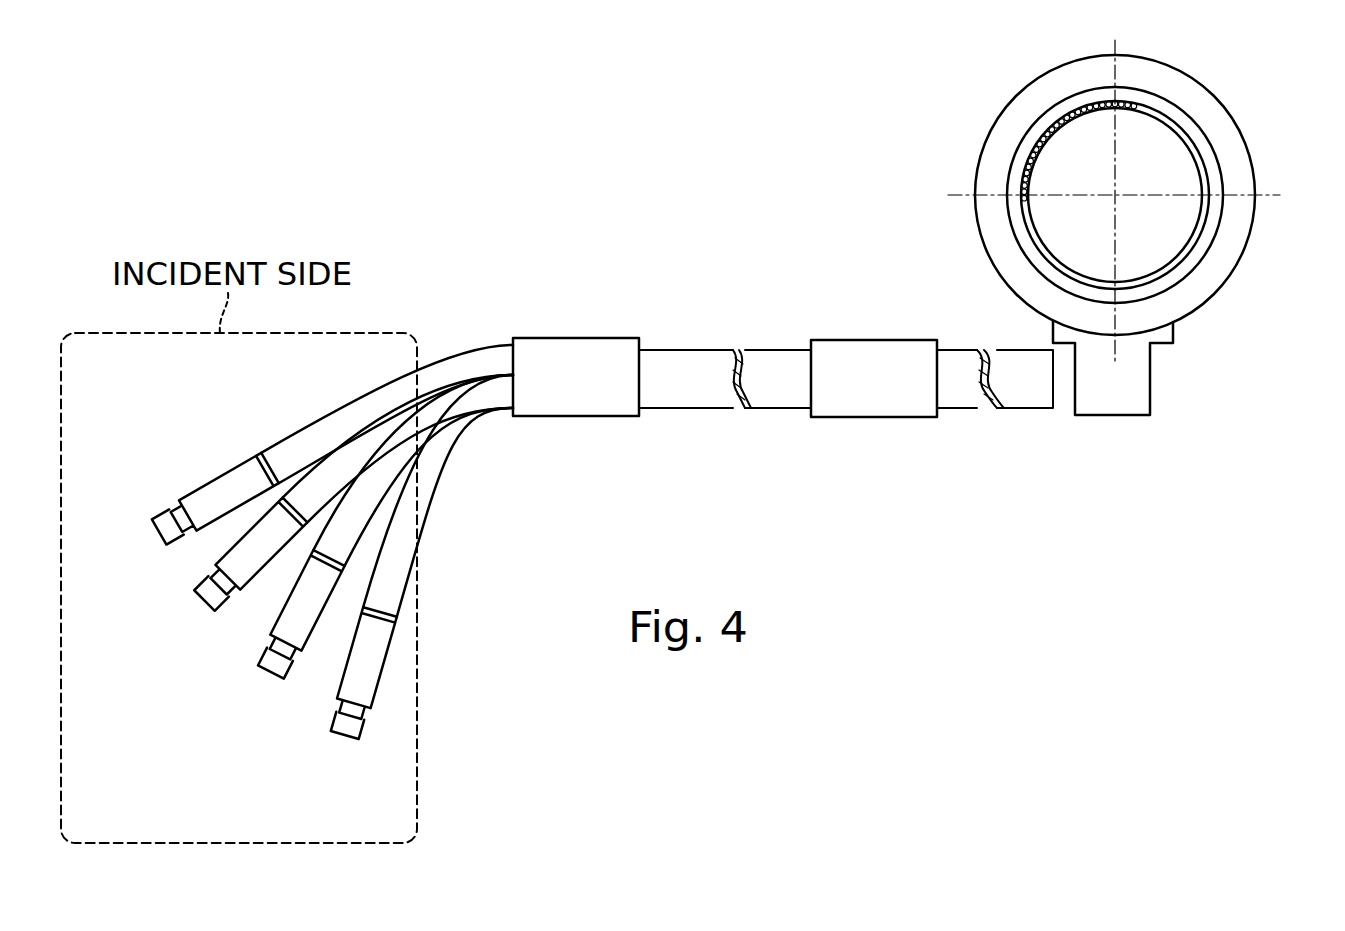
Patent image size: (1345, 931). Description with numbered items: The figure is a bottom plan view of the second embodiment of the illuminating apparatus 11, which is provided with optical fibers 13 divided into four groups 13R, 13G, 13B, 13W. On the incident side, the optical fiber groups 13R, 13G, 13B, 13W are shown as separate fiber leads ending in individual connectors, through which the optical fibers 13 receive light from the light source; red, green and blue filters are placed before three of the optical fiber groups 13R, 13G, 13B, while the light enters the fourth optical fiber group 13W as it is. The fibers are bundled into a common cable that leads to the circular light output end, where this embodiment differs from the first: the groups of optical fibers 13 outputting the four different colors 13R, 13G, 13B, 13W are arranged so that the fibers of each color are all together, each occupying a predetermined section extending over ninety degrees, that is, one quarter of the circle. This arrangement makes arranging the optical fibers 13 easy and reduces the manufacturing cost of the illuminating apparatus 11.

The illuminating apparatus 11 is at (933, 600).
The optical fibers 13 is at (680, 360).
The optical fiber group (red) 13R is at (1033, 132).
The optical fiber group (green) 13G is at (1197, 142).
The optical fiber group (blue) 13B is at (1183, 257).
The optical fiber group (white) 13W is at (1037, 257).